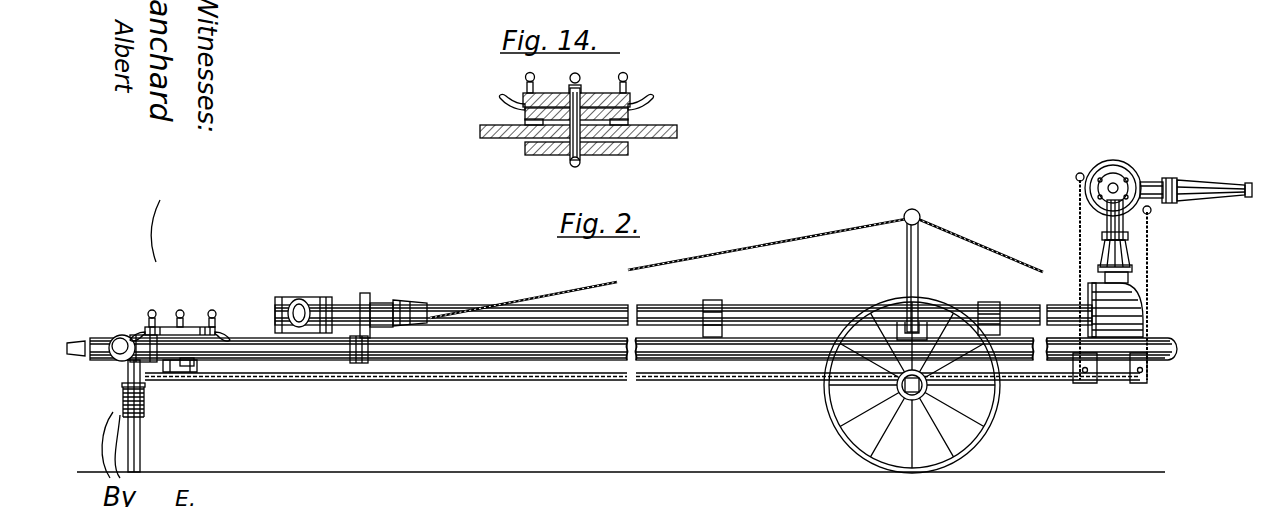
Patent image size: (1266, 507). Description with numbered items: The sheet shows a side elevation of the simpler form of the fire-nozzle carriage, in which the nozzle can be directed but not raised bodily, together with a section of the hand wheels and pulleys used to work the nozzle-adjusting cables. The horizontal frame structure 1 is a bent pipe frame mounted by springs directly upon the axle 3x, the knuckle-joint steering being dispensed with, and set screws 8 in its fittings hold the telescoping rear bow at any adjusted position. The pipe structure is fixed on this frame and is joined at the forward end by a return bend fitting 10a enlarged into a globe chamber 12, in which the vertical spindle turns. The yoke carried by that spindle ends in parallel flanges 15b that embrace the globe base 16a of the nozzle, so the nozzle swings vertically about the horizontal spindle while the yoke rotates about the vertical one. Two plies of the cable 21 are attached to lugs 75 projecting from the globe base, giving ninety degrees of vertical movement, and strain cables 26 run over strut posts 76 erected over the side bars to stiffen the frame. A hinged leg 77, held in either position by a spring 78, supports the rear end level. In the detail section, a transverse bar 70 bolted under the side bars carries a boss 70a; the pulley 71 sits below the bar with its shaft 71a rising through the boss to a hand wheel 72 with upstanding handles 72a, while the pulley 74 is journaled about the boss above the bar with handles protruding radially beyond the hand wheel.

In FIG. 2, the horizontal frame structure 1 is at (622, 355).
In FIG. 2, the axle 3x is at (912, 385).
In FIG. 2, the set screw 8 is at (119, 338).
In FIG. 2, the return bend fitting 10a is at (1133, 279).
In FIG. 2, the globe chamber 12 is at (1137, 288).
In FIG. 2, the parallel flanges 15b is at (1191, 176).
In FIG. 2, the globe base 16a is at (1131, 187).
In FIG. 2, the cable 21 is at (642, 392).
In FIG. 2, the strain cable 26 is at (736, 268).
In FIG. 14, the transverse bar 70 is at (607, 121).
In FIG. 2, the transverse bar 70 is at (222, 331).
In FIG. 14, the boss 70a is at (615, 82).
In FIG. 14, the pulley 71 is at (590, 160).
In FIG. 14, the shaft 71a is at (559, 140).
In FIG. 14, the hand wheel 72 is at (599, 97).
In FIG. 2, the hand wheel 72 is at (192, 323).
In FIG. 14, the upstanding handles 72a is at (609, 80).
In FIG. 2, the upstanding handles 72a is at (180, 313).
In FIG. 14, the pulley 74 is at (602, 113).
In FIG. 2, the lug 75 is at (1111, 180).
In FIG. 2, the strut post 76 is at (930, 270).
In FIG. 2, the leg 77 is at (155, 416).
In FIG. 2, the spring 78 is at (151, 400).